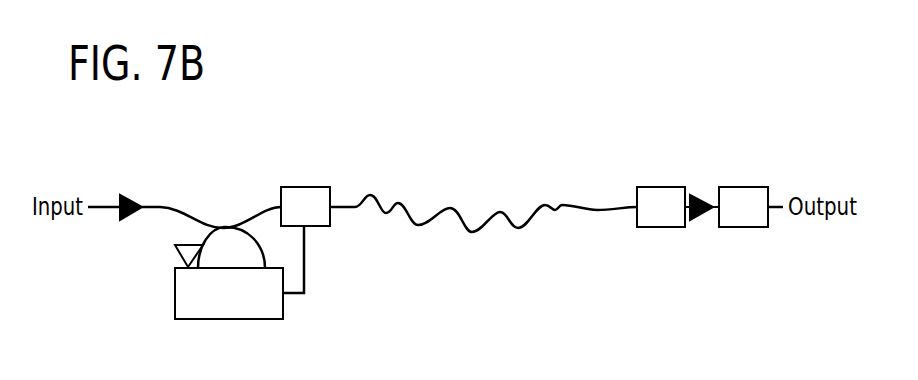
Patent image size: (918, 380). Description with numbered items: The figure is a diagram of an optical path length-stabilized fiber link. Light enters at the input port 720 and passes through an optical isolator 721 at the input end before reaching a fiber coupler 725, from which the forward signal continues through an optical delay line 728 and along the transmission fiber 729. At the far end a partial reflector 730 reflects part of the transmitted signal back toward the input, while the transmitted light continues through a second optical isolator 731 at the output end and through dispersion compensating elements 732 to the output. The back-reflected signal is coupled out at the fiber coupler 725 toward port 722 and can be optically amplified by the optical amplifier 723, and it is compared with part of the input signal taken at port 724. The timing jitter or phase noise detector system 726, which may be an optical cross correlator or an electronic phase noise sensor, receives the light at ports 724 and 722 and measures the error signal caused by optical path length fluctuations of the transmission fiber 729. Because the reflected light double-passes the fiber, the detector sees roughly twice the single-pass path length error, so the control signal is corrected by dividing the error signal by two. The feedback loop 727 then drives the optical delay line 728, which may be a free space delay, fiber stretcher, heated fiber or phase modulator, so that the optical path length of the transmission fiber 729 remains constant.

The input port 720 is at (103, 204).
The optical isolator 721 is at (131, 194).
The port 722 is at (207, 227).
The optical amplifier 723 is at (180, 248).
The port 724 is at (259, 246).
The fiber coupler 725 is at (223, 226).
The timing jitter or phase noise detector system 726 is at (180, 319).
The feedback loop 727 is at (305, 262).
The optical delay line 728 is at (303, 187).
The transmission fiber 729 is at (435, 217).
The partial reflector 730 is at (650, 187).
The optical isolator 731 is at (703, 195).
The dispersion compensating elements 732 is at (754, 187).